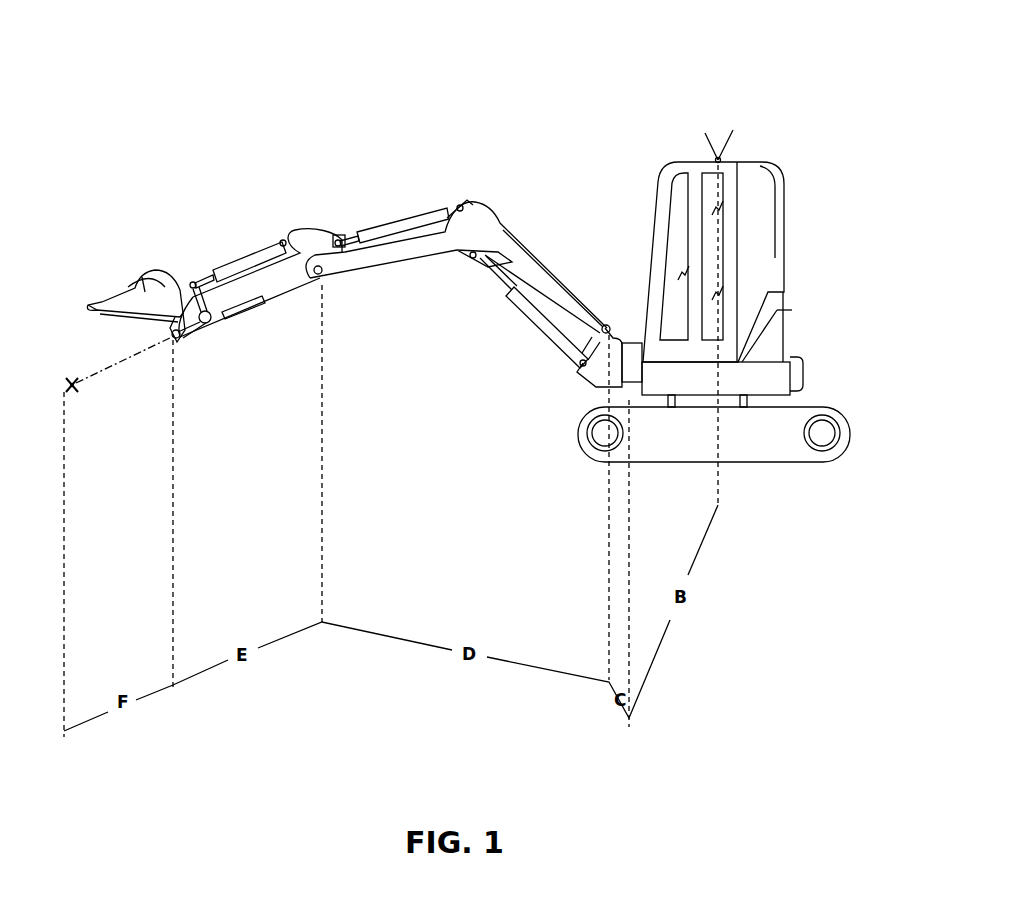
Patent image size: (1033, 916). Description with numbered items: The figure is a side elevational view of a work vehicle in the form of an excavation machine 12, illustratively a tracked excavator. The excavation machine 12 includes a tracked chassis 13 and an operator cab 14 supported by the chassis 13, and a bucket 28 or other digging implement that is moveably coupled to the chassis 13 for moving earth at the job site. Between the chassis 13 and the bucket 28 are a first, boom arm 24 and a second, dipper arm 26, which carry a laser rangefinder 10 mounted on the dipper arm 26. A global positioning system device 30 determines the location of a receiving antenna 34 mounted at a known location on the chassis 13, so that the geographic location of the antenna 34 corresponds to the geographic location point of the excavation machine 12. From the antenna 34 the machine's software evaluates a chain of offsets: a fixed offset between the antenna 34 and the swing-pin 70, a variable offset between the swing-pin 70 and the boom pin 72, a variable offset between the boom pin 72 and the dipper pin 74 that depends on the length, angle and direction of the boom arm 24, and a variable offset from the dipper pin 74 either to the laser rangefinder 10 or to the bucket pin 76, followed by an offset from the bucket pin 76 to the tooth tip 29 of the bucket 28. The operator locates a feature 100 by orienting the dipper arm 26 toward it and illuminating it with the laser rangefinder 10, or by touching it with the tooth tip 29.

The laser rangefinder 10 is at (237, 323).
The excavation machine 12 is at (573, 120).
The tracked chassis 13 is at (760, 355).
The operator cab 14 is at (760, 212).
The boom arm 24 is at (495, 200).
The dipper arm 26 is at (275, 250).
The bucket 28 is at (141, 276).
The tooth tip 29 is at (86, 316).
The global positioning system device 30 is at (718, 108).
The receiving antenna 34 is at (736, 147).
The swing-pin 70 is at (638, 368).
The boom pin 72 is at (610, 322).
The dipper pin 74 is at (321, 280).
The bucket pin 76 is at (176, 378).
The feature 100 is at (74, 392).